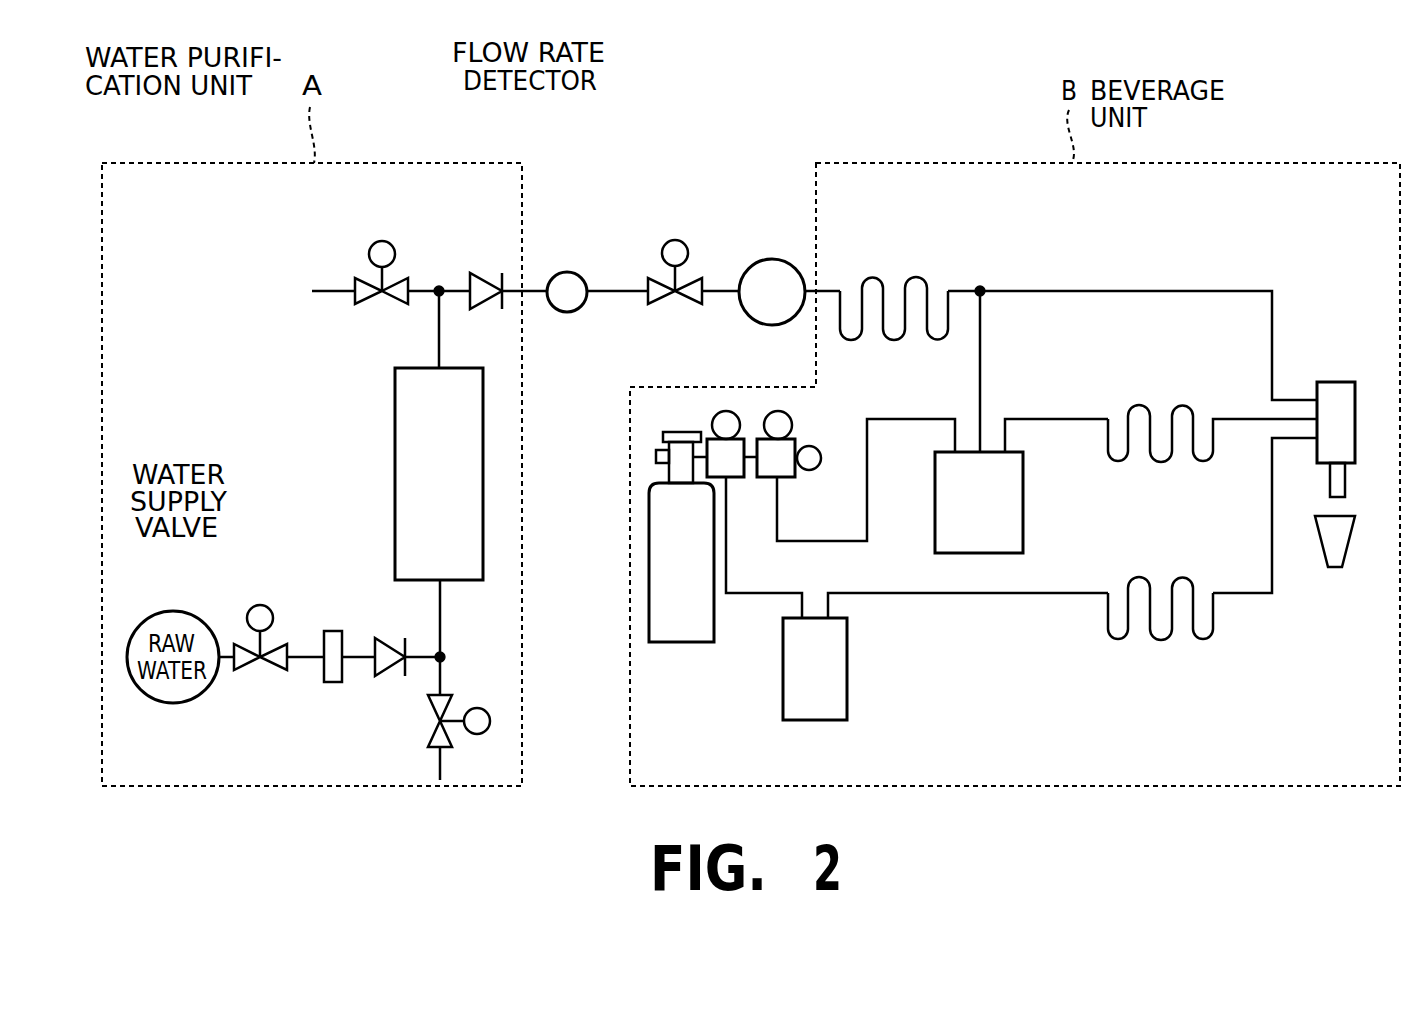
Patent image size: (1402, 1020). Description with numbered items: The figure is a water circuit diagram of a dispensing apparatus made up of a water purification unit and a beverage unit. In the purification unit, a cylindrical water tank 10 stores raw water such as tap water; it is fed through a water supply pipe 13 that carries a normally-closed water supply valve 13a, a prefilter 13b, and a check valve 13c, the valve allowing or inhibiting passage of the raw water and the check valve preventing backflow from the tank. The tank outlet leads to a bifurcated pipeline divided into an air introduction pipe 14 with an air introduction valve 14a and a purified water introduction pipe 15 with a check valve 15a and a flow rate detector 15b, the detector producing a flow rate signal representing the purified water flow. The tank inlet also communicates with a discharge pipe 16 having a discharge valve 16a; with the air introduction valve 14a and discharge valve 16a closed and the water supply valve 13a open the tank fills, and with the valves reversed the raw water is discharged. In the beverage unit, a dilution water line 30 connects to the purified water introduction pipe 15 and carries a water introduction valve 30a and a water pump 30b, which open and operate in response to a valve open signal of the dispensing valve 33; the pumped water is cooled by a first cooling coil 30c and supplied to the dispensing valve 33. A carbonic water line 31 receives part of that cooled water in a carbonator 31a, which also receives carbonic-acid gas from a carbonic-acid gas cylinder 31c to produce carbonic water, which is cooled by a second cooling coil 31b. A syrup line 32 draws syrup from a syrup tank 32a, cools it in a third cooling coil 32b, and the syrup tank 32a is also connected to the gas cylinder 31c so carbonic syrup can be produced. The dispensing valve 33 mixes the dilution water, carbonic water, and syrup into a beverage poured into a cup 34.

The water tank 10 is at (395, 447).
The water supply pipe 13 is at (357, 657).
The water supply valve 13a is at (258, 605).
The prefilter 13b is at (328, 630).
The check valve 13c is at (393, 645).
The air introduction pipe 14 is at (330, 292).
The air introduction valve 14a is at (382, 240).
The purified water introduction pipe 15 is at (595, 297).
The check valve 15a is at (485, 275).
The flow rate detector 15b is at (567, 272).
The discharge pipe 16 is at (440, 767).
The discharge valve 16a is at (490, 721).
The dilution water line 30 is at (830, 290).
The water introduction valve 30a is at (675, 240).
The water pump 30b is at (775, 257).
The first cooling coil 30c is at (915, 277).
The carbonic water line 31 is at (878, 418).
The carbonator 31a is at (1025, 495).
The second cooling coil 31b is at (1140, 403).
The carbonic-acid gas cylinder 31c is at (695, 642).
The syrup line 32 is at (1000, 593).
The syrup tank 32a is at (847, 672).
The third cooling coil 32b is at (1140, 578).
The dispensing valve 33 is at (1335, 382).
The cup 34 is at (1338, 567).